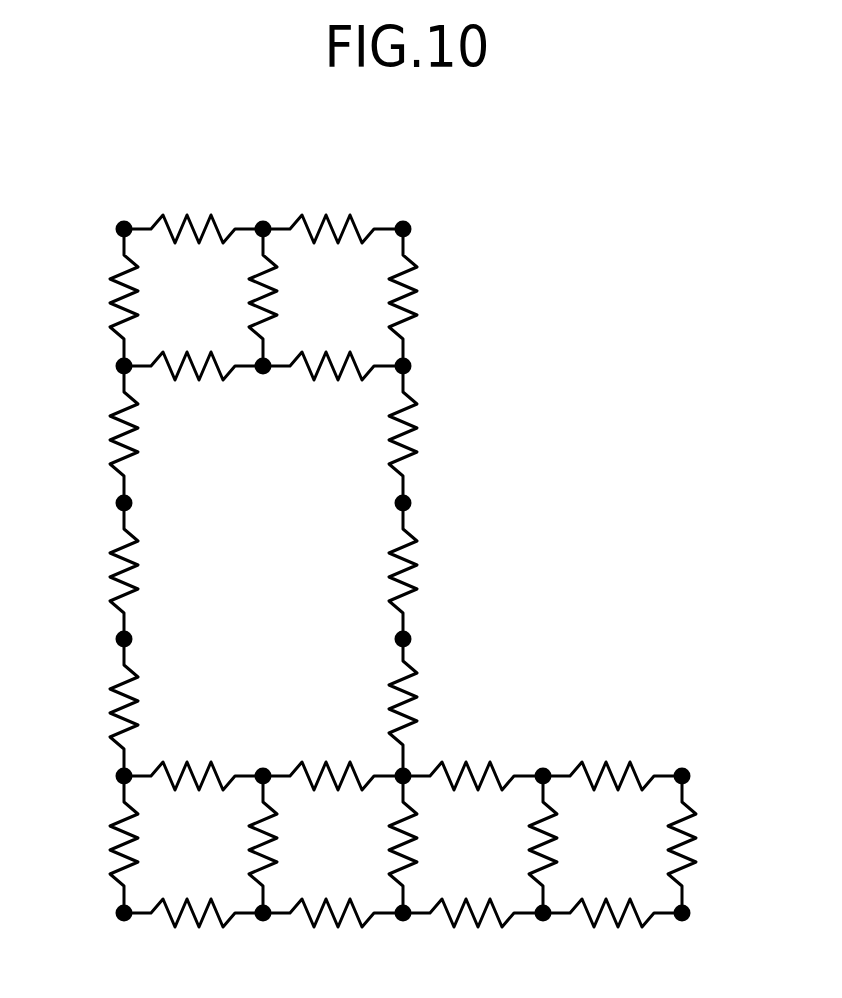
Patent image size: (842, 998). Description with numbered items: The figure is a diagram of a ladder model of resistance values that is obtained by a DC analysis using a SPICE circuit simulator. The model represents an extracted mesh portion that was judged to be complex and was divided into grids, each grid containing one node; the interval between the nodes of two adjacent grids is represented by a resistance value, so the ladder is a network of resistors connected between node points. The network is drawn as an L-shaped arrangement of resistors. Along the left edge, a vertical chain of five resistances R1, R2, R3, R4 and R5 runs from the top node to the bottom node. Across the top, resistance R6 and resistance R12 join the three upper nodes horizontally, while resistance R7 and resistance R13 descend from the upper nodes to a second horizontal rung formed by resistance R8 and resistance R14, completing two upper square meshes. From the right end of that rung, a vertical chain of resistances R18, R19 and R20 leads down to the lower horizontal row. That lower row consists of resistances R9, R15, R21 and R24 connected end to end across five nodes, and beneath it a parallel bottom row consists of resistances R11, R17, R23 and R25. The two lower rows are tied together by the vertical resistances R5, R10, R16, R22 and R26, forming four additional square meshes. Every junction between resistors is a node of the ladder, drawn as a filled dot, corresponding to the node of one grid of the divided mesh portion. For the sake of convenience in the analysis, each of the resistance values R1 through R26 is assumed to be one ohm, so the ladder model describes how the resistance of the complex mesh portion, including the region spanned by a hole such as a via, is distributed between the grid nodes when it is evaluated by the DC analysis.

The resistance value R1 is at (98, 297).
The resistance value R2 is at (98, 434).
The resistance value R3 is at (98, 571).
The resistance value R4 is at (98, 707).
The resistance value R5 is at (98, 844).
The resistance value R6 is at (193, 207).
The resistance value R7 is at (236, 297).
The resistance value R8 is at (193, 390).
The resistance value R9 is at (193, 759).
The resistance value R10 is at (226, 844).
The resistance value R11 is at (193, 940).
The resistance value R12 is at (333, 207).
The resistance value R13 is at (434, 297).
The resistance value R14 is at (333, 390).
The resistance value R15 is at (333, 759).
The resistance value R16 is at (369, 844).
The resistance value R17 is at (333, 940).
The resistance value R18 is at (434, 434).
The resistance value R19 is at (435, 571).
The resistance value R20 is at (435, 707).
The resistance value R21 is at (473, 759).
The resistance value R22 is at (510, 844).
The resistance value R23 is at (473, 940).
The resistance value R24 is at (612, 759).
The resistance value R25 is at (612, 940).
The resistance value R26 is at (714, 844).